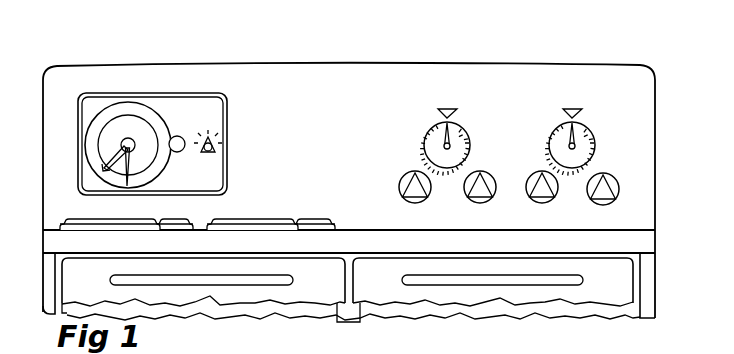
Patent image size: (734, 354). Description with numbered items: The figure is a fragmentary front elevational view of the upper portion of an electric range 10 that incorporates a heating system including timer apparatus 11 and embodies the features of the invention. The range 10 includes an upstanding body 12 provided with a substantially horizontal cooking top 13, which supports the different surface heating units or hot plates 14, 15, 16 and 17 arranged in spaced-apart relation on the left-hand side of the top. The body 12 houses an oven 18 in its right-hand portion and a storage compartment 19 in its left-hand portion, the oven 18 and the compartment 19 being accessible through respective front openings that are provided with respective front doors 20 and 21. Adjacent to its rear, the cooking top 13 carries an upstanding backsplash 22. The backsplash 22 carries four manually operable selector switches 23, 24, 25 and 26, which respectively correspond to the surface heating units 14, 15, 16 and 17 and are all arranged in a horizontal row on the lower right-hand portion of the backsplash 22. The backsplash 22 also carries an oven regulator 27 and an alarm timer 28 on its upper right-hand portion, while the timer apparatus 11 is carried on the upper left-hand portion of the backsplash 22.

The electric range 10 is at (365, 204).
The timer apparatus 11 is at (236, 118).
The upstanding body 12 is at (655, 290).
The cooking top 13 is at (349, 215).
The surface heating unit 14 is at (93, 219).
The surface heating unit 15 is at (169, 219).
The surface heating unit 16 is at (232, 219).
The surface heating unit 17 is at (282, 218).
The oven 18 is at (493, 301).
The storage compartment 19 is at (203, 301).
The front door 20 is at (556, 300).
The front door 21 is at (284, 305).
The backsplash 22 is at (652, 108).
The selector switch 23 is at (405, 178).
The selector switch 24 is at (491, 182).
The selector switch 25 is at (531, 180).
The selector switch 26 is at (607, 179).
The oven regulator 27 is at (428, 136).
The alarm timer 28 is at (594, 136).